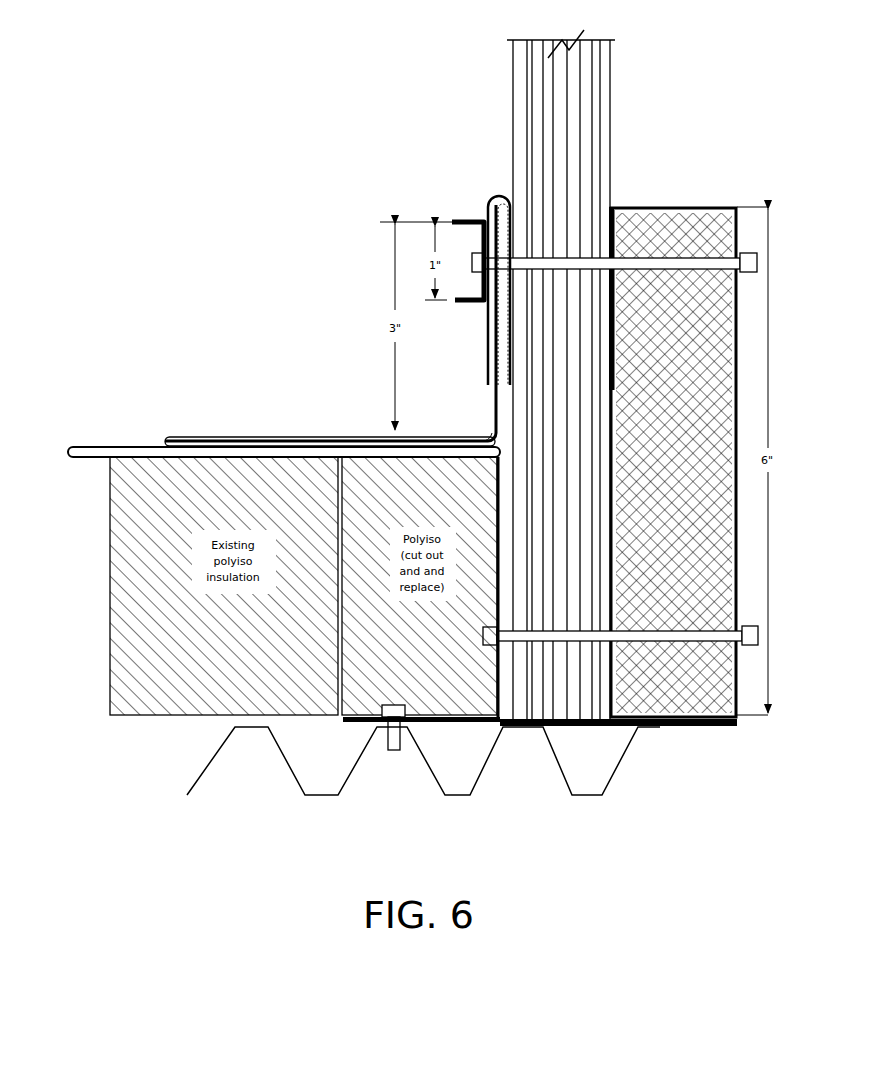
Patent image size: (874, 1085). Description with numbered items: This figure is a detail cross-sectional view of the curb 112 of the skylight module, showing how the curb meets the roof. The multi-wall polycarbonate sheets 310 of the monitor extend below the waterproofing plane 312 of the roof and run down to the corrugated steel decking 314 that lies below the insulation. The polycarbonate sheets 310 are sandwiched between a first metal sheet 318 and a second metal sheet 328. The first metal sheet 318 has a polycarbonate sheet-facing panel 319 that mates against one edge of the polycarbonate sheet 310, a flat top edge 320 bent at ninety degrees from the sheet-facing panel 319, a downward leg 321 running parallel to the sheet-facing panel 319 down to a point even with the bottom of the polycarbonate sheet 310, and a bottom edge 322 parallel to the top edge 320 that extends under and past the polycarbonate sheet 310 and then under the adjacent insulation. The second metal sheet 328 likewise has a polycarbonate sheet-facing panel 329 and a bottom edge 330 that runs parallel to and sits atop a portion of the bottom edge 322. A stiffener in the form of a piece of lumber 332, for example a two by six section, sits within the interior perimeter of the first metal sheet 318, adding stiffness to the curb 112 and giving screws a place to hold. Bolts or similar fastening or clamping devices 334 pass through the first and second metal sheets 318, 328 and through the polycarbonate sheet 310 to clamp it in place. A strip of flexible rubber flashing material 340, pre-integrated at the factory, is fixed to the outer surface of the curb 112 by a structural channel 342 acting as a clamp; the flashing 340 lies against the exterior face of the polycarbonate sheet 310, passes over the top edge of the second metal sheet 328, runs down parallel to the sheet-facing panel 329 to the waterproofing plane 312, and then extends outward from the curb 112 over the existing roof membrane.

The curb 112 is at (292, 115).
The polycarbonate sheets 310 is at (558, 198).
The waterproofing plane 312 is at (86, 445).
The corrugated steel decking 314 is at (630, 766).
The first metal sheet 318 is at (745, 309).
The polycarbonate sheet-facing panel 319 is at (616, 328).
The top edge 320 is at (612, 207).
The downward leg 321 is at (737, 600).
The bottom edge 322 is at (588, 724).
The second metal sheet 328 is at (492, 313).
The polycarbonate sheet-facing panel 329 is at (493, 436).
The bottom edge 330 is at (343, 719).
The piece of lumber 332 is at (648, 232).
The fastening or clamping devices 334 is at (760, 256).
The flexible rubber flashing material 340 is at (340, 432).
The structural channel 342 is at (460, 220).